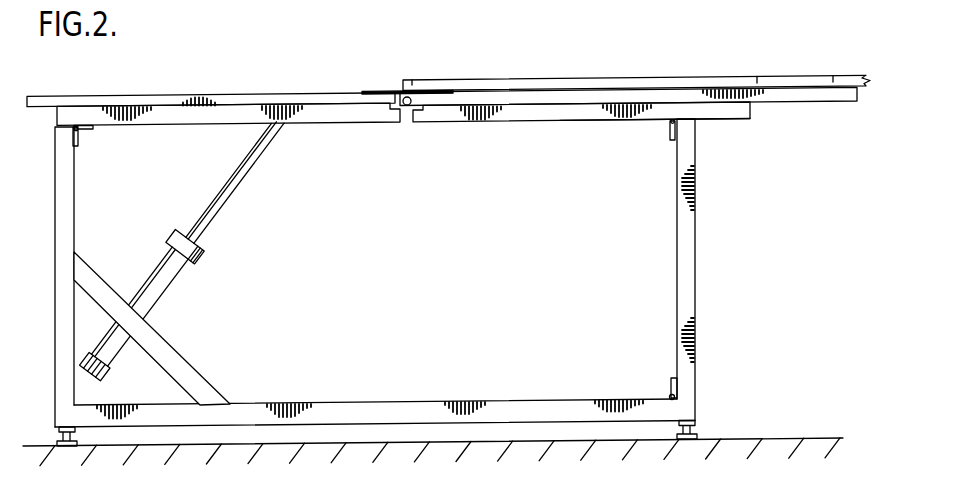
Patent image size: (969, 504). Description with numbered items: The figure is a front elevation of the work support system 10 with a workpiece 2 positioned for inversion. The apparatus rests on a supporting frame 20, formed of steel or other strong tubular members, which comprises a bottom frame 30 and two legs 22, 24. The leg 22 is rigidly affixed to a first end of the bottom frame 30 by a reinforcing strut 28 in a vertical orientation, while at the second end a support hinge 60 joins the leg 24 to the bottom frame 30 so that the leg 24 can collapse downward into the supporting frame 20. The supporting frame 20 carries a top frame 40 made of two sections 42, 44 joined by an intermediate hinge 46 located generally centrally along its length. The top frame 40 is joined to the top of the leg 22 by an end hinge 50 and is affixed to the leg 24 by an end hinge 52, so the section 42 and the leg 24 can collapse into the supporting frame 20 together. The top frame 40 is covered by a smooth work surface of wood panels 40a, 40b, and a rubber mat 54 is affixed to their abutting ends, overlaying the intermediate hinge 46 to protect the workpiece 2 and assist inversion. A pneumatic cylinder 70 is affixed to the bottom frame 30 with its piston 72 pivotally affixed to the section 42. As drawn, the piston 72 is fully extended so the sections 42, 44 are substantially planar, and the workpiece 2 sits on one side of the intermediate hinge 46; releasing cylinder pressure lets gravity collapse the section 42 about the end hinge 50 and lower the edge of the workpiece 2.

The workpiece 2 is at (663, 79).
The work support system 10 is at (448, 105).
The supporting frame 20 is at (407, 282).
The leg 22 is at (56, 305).
The leg 24 is at (696, 300).
The reinforcing strut 28 is at (205, 388).
The bottom frame 30 is at (388, 400).
The top frame 40 is at (456, 130).
The wood panel 40a is at (221, 93).
The wood panel 40b is at (546, 92).
The section 42 is at (340, 123).
The section 44 is at (596, 121).
The intermediate hinge 46 is at (408, 106).
The end hinge 50 is at (78, 128).
The end hinge 52 is at (668, 123).
The rubber mat 54 is at (372, 91).
The support hinge 60 is at (671, 395).
The pneumatic cylinder 70 is at (163, 272).
The piston 72 is at (256, 173).